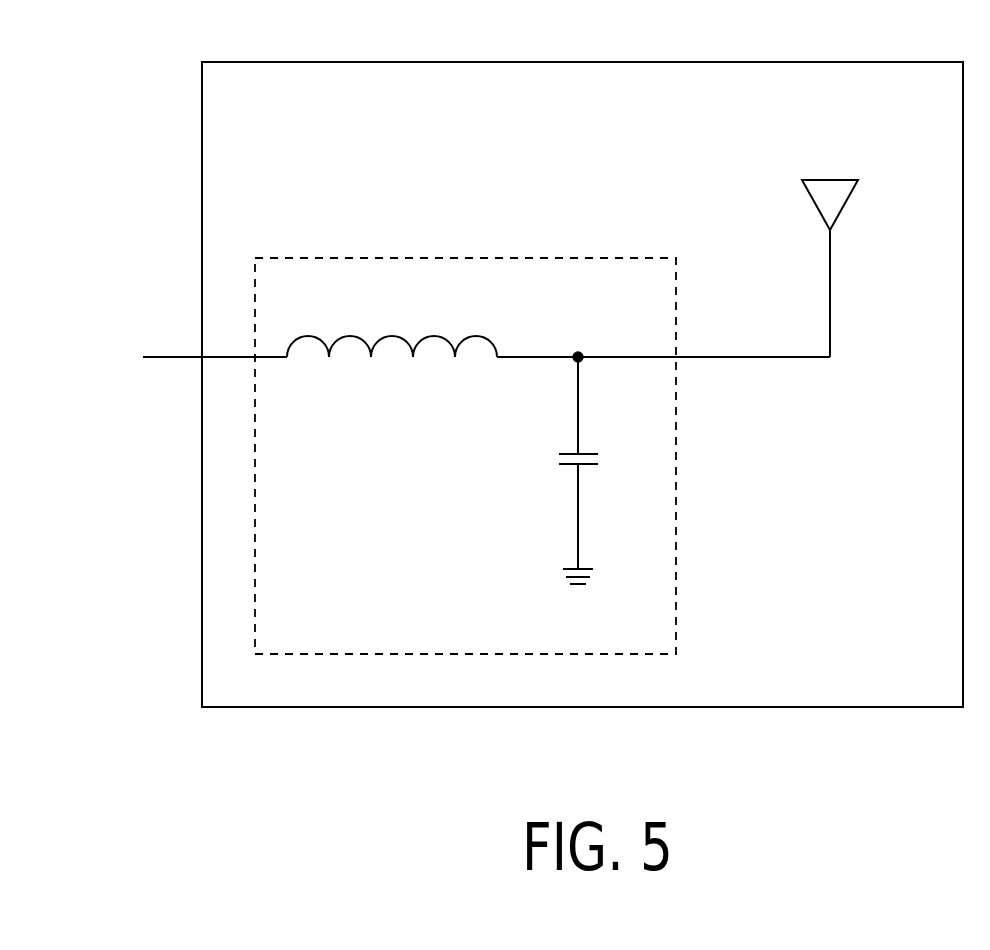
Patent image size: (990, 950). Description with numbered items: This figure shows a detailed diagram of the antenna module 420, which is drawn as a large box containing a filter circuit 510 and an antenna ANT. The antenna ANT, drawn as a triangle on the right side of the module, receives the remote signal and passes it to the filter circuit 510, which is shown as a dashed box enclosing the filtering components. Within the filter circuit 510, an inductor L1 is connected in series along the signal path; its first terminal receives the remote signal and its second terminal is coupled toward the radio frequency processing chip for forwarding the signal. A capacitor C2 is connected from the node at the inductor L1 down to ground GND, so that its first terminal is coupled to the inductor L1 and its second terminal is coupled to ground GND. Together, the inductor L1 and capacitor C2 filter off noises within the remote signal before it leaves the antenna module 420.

The antenna module 420 is at (820, 62).
The filter circuit 510 is at (486, 431).
The inductor L1 is at (392, 323).
The capacitor C2 is at (605, 463).
The ground GND is at (581, 599).
The antenna ANT is at (869, 268).